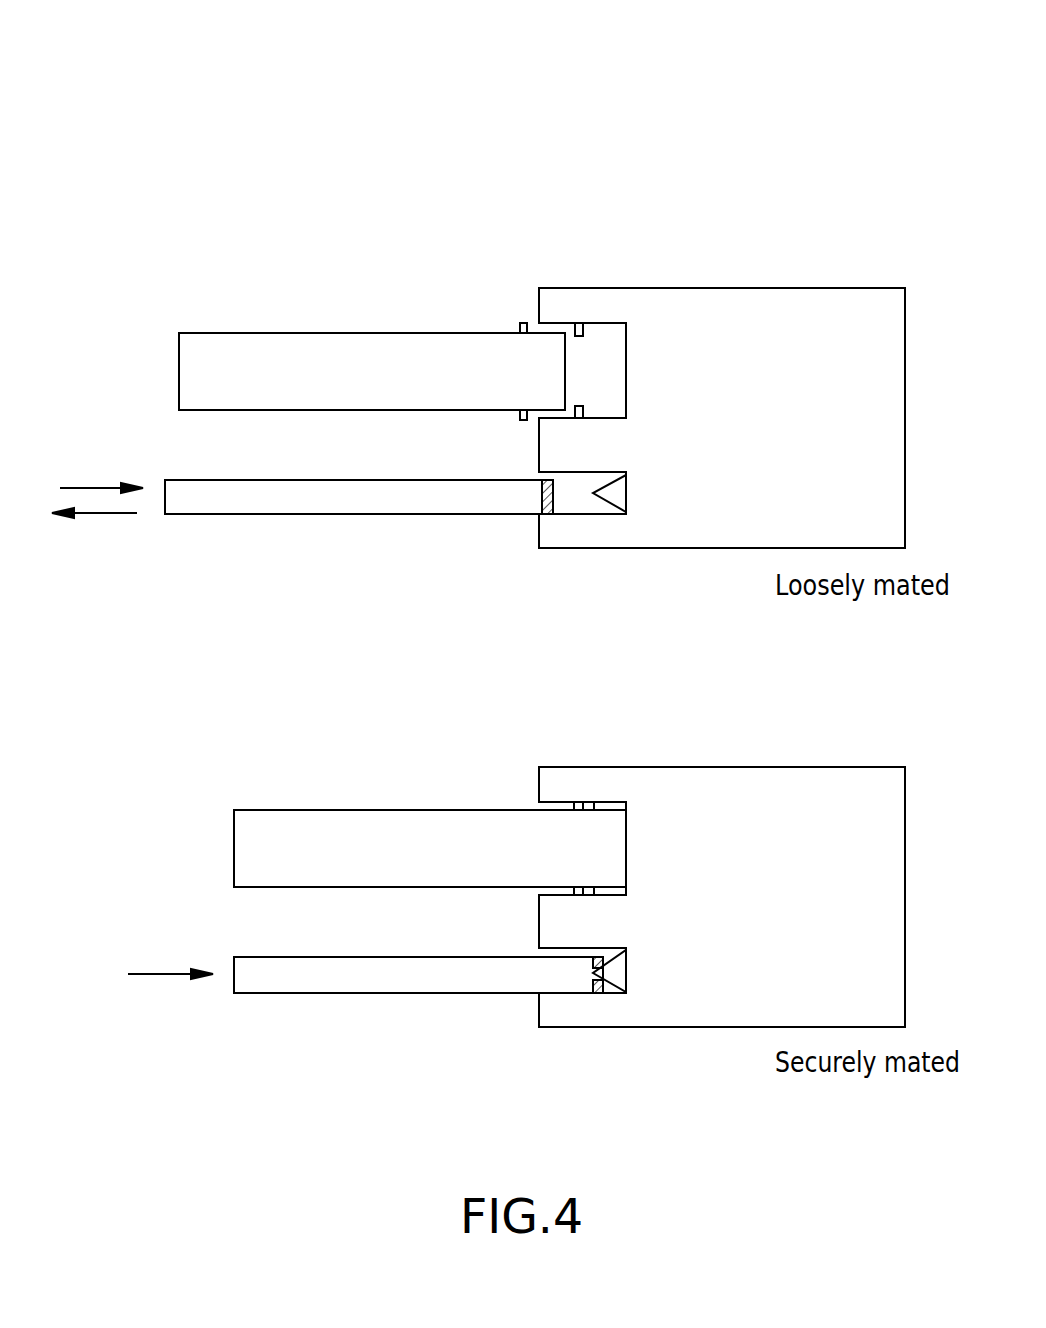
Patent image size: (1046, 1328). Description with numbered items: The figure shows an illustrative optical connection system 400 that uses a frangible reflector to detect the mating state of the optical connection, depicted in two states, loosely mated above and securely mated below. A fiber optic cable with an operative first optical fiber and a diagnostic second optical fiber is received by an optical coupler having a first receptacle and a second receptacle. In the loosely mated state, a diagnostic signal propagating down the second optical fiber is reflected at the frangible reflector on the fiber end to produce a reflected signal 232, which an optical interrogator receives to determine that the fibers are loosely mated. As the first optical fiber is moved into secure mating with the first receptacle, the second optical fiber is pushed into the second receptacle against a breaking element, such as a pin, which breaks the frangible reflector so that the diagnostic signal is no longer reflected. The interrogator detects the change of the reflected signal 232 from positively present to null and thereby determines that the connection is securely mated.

The optical connection system 400 is at (816, 126).
The reflected signal 232 is at (110, 516).